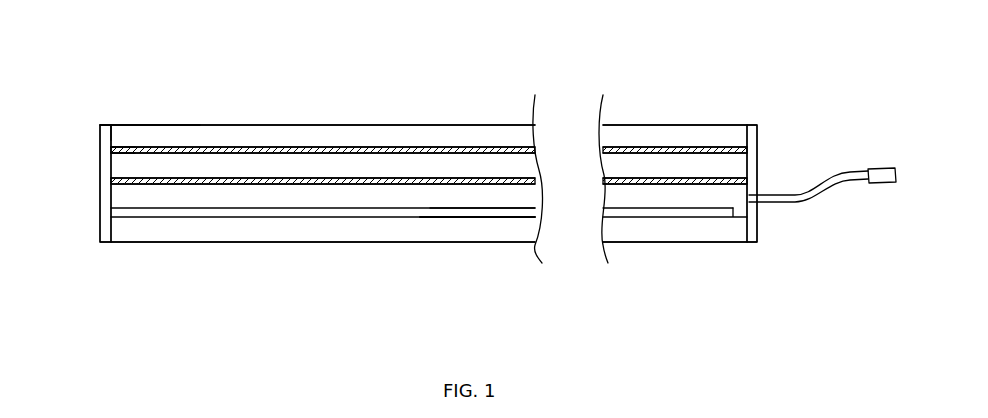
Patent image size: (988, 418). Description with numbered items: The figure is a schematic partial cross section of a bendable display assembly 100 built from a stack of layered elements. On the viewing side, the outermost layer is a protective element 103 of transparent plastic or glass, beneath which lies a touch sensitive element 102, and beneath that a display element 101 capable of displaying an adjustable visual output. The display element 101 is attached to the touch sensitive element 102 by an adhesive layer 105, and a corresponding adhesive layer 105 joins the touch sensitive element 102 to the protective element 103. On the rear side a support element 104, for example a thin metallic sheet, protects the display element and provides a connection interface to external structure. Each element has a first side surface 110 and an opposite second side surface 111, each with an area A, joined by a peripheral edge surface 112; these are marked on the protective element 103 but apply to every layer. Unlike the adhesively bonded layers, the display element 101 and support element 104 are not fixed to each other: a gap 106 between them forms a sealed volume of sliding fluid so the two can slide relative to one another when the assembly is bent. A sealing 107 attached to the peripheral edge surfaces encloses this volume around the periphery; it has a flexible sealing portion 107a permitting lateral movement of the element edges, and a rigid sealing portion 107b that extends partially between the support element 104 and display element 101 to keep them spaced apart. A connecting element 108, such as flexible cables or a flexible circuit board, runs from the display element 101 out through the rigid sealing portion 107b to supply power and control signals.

The bendable display assembly 100 is at (130, 73).
The display element 101 is at (250, 197).
The touch sensitive element 102 is at (232, 163).
The protective element 103 is at (260, 135).
The support element 104 is at (297, 233).
The adhesive layer 105 is at (320, 182).
The gap 106 is at (383, 213).
The sealing 107 is at (421, 203).
The flexible sealing portion 107a is at (109, 192).
The rigid sealing portion 107b is at (757, 232).
The connecting element 108 is at (808, 195).
The first side surface 110 is at (130, 125).
The second side surface 111 is at (130, 150).
The peripheral edge surface 112 is at (110, 137).
The area A is at (517, 208).